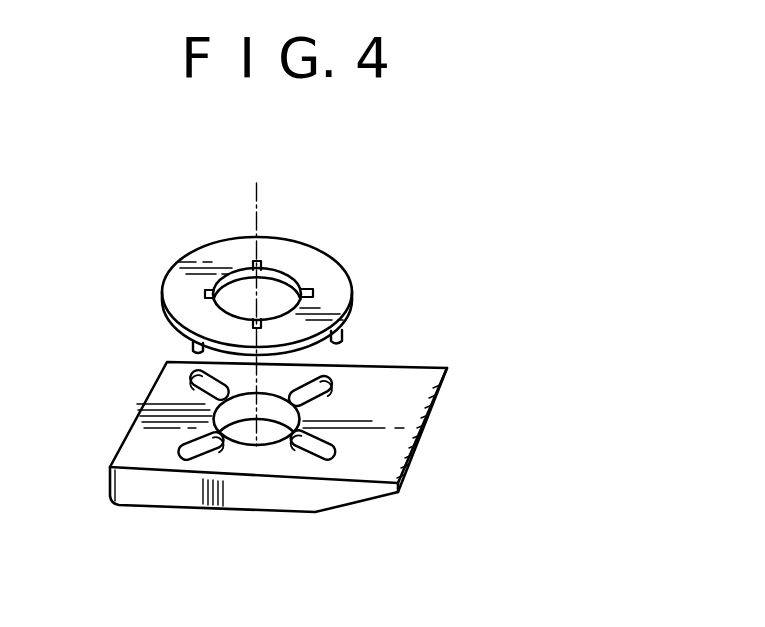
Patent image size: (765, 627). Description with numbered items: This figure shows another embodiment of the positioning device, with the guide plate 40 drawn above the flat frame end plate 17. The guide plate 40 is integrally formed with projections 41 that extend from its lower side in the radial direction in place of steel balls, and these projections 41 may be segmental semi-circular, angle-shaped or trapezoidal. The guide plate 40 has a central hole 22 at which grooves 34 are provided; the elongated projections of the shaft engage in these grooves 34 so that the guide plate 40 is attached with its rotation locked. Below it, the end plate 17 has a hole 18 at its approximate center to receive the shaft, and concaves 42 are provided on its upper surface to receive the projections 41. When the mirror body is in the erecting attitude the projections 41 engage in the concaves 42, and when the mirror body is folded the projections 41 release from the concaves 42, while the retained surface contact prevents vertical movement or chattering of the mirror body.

The end plate 17 is at (158, 460).
The hole 18 is at (267, 434).
The hole 22 is at (273, 290).
The grooves 34 is at (312, 292).
The guide plate 40 is at (344, 263).
The projections 41 is at (192, 350).
The concaves 42 is at (196, 383).